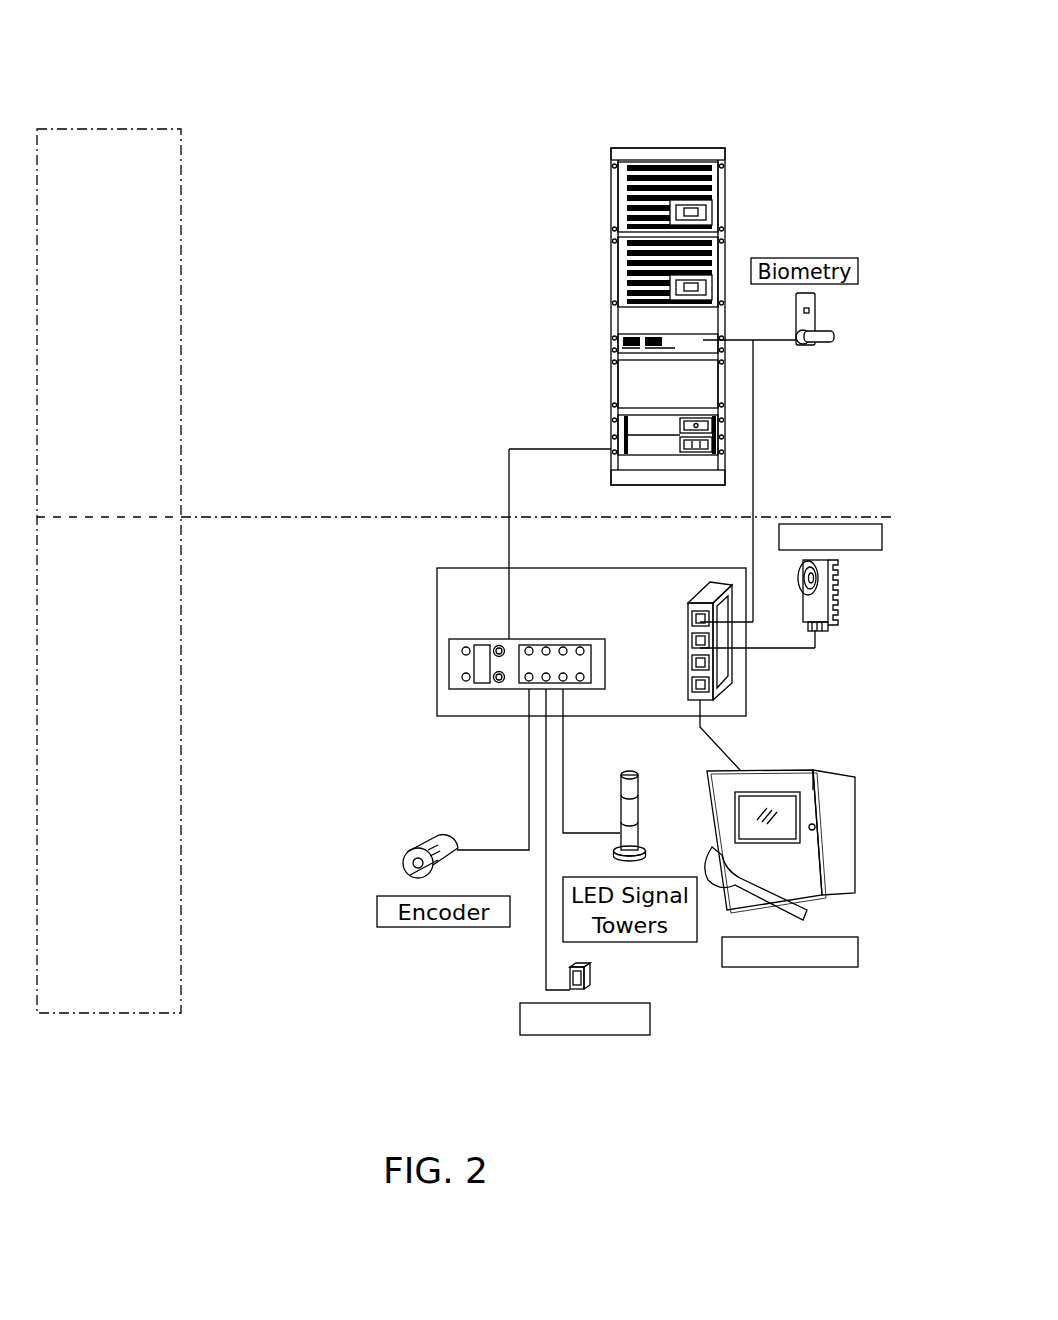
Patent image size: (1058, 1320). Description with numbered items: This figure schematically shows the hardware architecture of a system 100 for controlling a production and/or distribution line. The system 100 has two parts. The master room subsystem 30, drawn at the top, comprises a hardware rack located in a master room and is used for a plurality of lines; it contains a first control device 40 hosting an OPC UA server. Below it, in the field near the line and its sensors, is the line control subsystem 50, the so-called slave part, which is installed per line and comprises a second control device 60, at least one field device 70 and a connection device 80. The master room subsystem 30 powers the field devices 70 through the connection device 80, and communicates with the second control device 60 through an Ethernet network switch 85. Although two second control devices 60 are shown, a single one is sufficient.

The system 100 is at (128, 58).
The master room subsystem 30 is at (308, 204).
The first control device 40 is at (666, 148).
The line control subsystem 50 is at (308, 596).
The second control device 60 is at (848, 580).
The field device 70 is at (593, 979).
The connection device 80 is at (476, 638).
The Ethernet network switch 85 is at (708, 592).